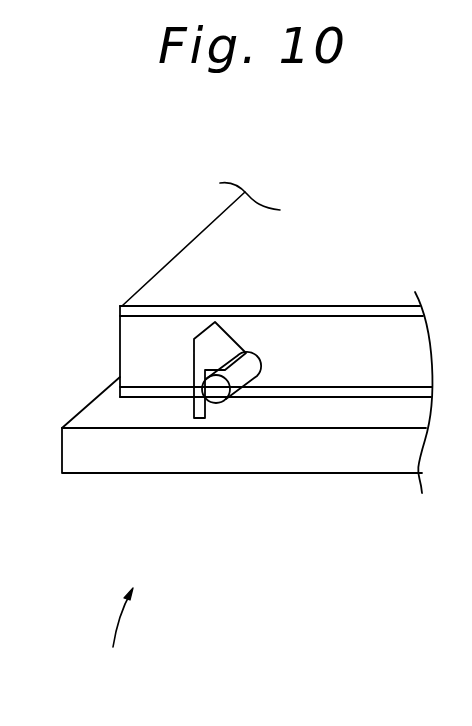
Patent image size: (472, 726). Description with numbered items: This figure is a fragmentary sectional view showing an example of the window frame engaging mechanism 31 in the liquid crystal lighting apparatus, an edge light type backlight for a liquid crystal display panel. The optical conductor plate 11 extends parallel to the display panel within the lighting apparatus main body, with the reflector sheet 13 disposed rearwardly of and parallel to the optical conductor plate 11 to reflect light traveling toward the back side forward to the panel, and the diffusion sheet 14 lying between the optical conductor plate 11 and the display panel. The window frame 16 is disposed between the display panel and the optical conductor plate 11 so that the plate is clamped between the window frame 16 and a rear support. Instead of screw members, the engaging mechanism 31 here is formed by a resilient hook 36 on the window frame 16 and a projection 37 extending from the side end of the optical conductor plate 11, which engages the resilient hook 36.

The optical conductor plate 11 is at (138, 347).
The reflector sheet 13 is at (157, 306).
The diffusion sheet 14 is at (357, 393).
The window frame 16 is at (247, 463).
The engaging mechanism 31 is at (114, 635).
The resilient hook 36 is at (202, 358).
The projection 37 is at (220, 393).